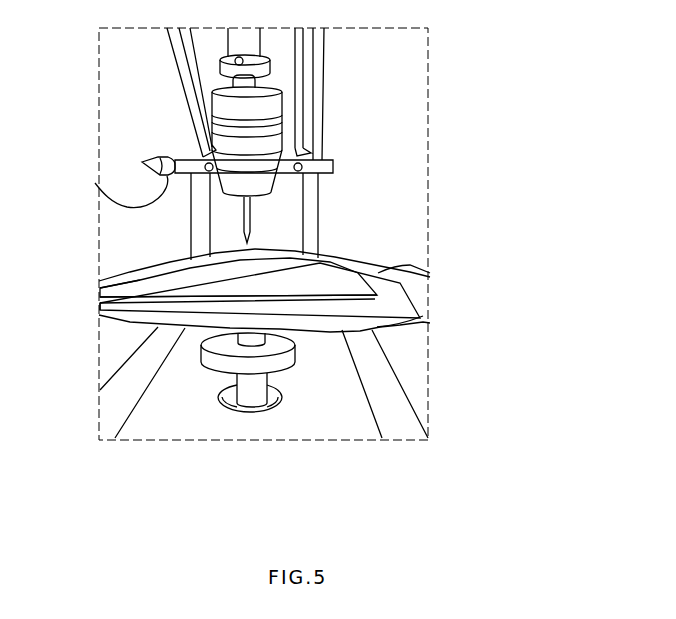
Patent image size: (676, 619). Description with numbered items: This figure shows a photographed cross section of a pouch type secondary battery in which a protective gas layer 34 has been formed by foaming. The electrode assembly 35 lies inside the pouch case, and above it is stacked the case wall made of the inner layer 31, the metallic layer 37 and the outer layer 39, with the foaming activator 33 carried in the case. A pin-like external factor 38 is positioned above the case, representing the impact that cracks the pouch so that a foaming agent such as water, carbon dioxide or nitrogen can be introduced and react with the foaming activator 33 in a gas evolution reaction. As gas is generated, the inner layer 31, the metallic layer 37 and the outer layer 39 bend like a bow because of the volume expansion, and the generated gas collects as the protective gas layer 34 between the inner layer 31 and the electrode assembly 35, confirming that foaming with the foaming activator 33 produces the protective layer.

The inner layer 31 is at (238, 277).
The foaming activator 33 is at (238, 299).
The protective gas layer 34 is at (121, 289).
The electrode assembly 35 is at (99, 306).
The metallic layer 37 is at (260, 290).
The external factor 38 is at (250, 218).
The outer layer 39 is at (430, 277).